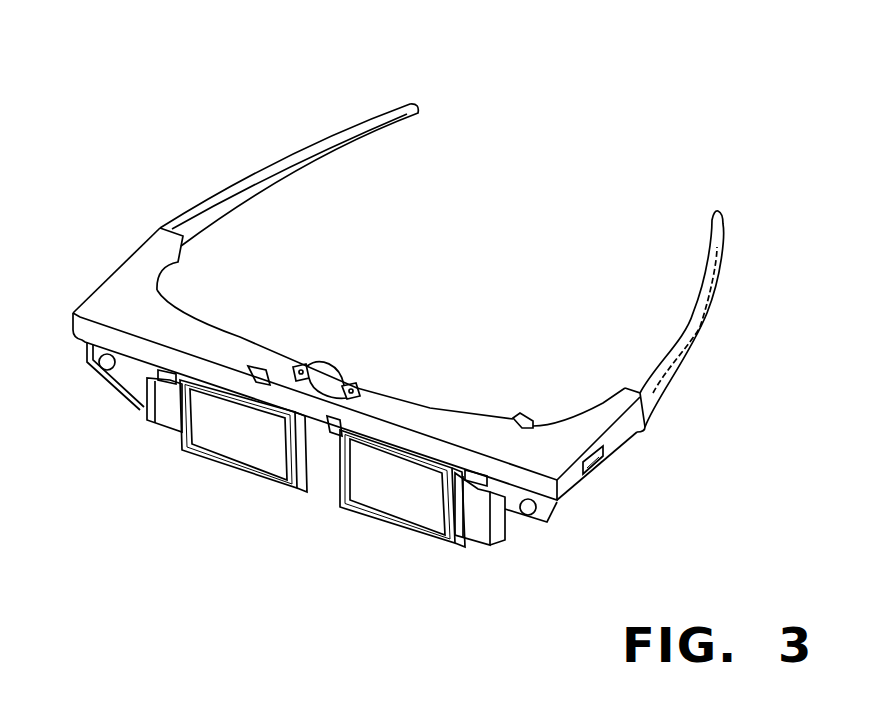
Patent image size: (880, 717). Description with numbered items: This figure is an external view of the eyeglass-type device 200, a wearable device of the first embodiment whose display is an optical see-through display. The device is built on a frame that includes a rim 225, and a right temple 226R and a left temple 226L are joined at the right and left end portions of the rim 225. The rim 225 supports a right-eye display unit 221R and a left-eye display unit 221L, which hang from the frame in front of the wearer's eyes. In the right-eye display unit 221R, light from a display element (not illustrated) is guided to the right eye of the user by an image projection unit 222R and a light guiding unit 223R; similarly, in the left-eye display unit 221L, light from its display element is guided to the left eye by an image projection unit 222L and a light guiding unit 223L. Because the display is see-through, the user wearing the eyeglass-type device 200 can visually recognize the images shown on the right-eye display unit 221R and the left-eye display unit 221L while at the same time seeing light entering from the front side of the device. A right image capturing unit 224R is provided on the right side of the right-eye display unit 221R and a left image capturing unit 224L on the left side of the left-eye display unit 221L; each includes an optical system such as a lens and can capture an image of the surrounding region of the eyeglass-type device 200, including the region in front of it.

The eyeglass-type device 200 is at (458, 262).
The rim 225 is at (213, 333).
The right temple 226R is at (410, 114).
The left temple 226L is at (722, 223).
The right image capturing unit 224R is at (99, 367).
The left image capturing unit 224L is at (545, 508).
The right-eye display unit 221R is at (260, 528).
The image projection unit 222R is at (135, 393).
The light guiding unit 223R is at (238, 430).
The left-eye display unit 221L is at (525, 628).
The image projection unit 222L is at (507, 527).
The light guiding unit 223L is at (400, 483).